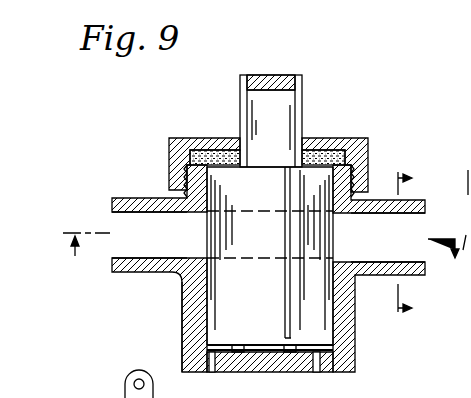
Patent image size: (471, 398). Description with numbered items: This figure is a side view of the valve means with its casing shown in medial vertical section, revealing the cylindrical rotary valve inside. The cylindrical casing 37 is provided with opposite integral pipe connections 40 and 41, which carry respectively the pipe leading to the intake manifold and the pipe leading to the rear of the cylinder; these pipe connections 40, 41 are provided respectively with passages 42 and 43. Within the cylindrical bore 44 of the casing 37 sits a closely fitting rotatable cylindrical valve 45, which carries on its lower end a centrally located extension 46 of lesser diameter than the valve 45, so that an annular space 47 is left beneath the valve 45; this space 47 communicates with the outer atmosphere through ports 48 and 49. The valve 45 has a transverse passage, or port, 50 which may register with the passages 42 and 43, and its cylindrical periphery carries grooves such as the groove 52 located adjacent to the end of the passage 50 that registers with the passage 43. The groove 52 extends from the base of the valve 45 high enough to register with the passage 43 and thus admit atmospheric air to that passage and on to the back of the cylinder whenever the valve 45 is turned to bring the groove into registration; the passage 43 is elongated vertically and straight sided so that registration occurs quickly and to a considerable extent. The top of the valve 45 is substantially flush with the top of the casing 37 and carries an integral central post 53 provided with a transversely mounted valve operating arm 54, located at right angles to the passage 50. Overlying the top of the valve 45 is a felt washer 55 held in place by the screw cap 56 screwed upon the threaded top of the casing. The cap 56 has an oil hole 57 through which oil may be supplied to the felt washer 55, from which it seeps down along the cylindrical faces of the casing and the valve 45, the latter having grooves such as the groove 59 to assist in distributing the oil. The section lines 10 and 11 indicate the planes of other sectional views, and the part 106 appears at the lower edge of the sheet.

The section line 10- 10 is at (73, 240).
The section line 11- 11 is at (401, 242).
The cylindrical casing 37 is at (182, 312).
The pipe connection 40 is at (119, 273).
The pipe connection 41 is at (425, 275).
The passage 42 is at (112, 250).
The passage 43 is at (405, 230).
The cylindrical bore 44 is at (335, 350).
The cylindrical valve 45 is at (207, 347).
The extension 46 is at (289, 353).
The annular space 47 is at (240, 353).
The port 48 is at (212, 372).
The port 49 is at (317, 372).
The transverse passage 50 is at (205, 234).
The groove 52 is at (336, 262).
The central post 53 is at (258, 108).
The valve operating arm 54 is at (275, 70).
The felt washer 55 is at (185, 138).
The screw cap 56 is at (190, 158).
The oil hole 57 is at (333, 138).
The groove 59 is at (285, 338).
The eye bracket 106 is at (115, 384).